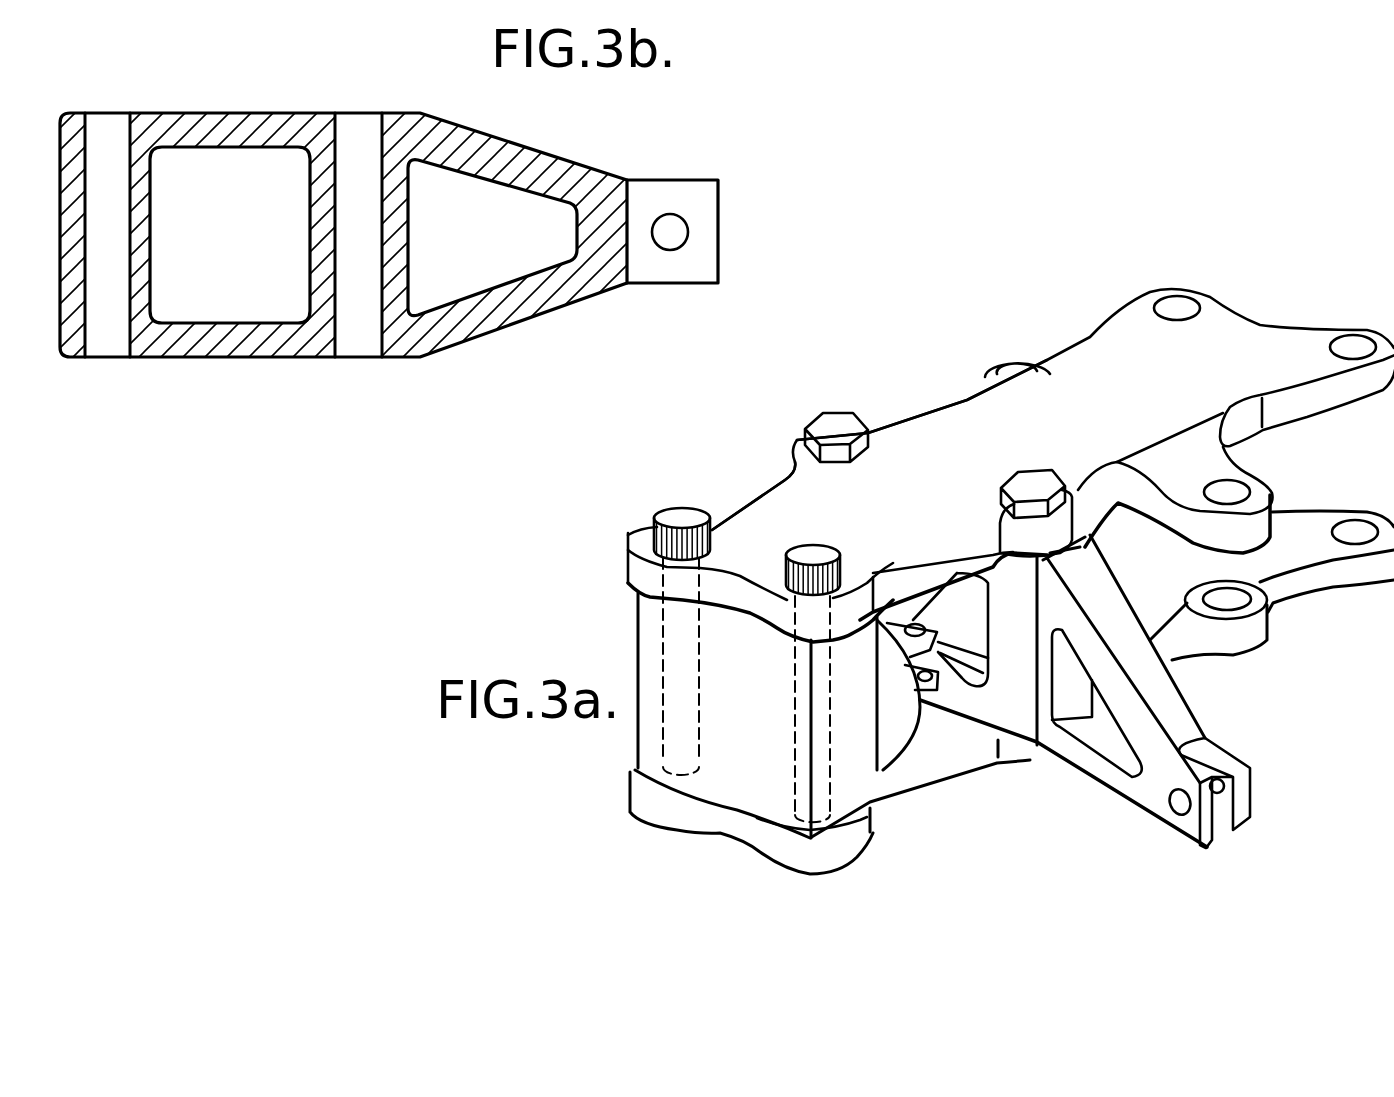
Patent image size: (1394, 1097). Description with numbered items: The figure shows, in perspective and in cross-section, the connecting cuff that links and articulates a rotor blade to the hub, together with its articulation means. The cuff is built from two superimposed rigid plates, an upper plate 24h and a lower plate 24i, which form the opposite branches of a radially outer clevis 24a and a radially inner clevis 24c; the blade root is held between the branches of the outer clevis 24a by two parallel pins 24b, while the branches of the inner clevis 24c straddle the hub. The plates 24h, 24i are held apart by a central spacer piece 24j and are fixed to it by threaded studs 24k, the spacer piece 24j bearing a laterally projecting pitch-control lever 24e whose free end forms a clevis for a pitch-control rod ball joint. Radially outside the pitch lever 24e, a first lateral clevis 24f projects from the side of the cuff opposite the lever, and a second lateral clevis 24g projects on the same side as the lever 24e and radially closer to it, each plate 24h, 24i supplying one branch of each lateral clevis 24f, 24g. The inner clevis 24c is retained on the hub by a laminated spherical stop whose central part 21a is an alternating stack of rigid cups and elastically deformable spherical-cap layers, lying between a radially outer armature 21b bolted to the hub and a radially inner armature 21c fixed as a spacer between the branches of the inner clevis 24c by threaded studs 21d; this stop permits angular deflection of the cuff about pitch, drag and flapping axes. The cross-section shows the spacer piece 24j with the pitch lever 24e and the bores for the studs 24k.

In FIG. 3A, the central part 21a is at (897, 703).
In FIG. 3A, the radially outer armature 21b is at (933, 697).
In FIG. 3A, the radially inner armature 21c is at (737, 728).
In FIG. 3A, the threaded studs 21d is at (670, 523).
In FIG. 3A, the radially outer clevis 24a is at (1147, 323).
In FIG. 3A, the pins 24b is at (1297, 290).
In FIG. 3A, the radially inner clevis 24c is at (745, 540).
In FIG. 3B, the pitch-control lever 24e is at (498, 300).
In FIG. 3A, the pitch-control lever 24e is at (1117, 780).
In FIG. 3A, the first lateral clevis 24f is at (1007, 358).
In FIG. 3A, the second lateral clevis 24g is at (1253, 500).
In FIG. 3A, the upper plate 24h is at (947, 452).
In FIG. 3A, the lower plate 24i is at (1283, 583).
In FIG. 3B, the central spacer piece 24j is at (240, 343).
In FIG. 3A, the central spacer piece 24j is at (1013, 667).
In FIG. 3B, the threaded studs 24k is at (113, 145).
In FIG. 3A, the threaded studs 24k is at (827, 430).